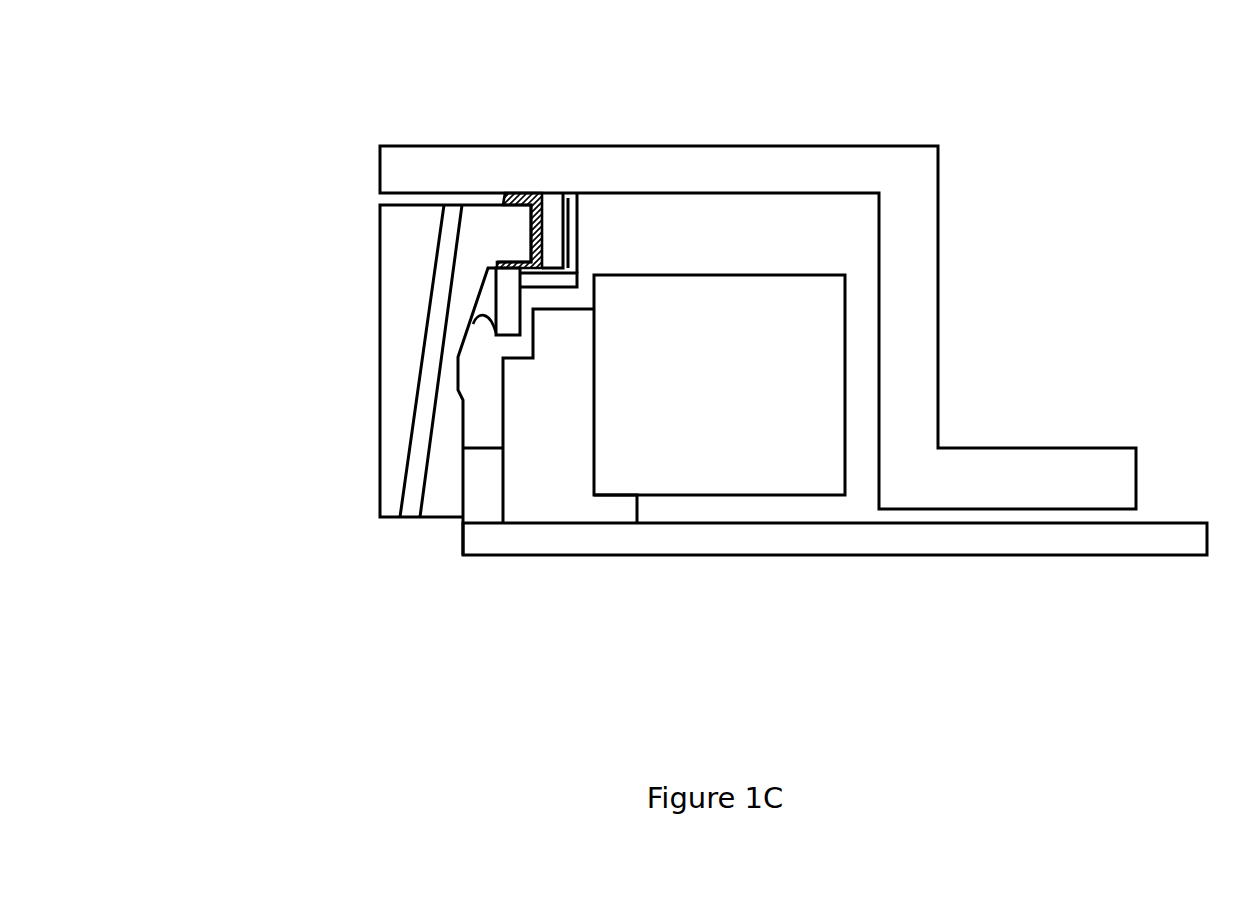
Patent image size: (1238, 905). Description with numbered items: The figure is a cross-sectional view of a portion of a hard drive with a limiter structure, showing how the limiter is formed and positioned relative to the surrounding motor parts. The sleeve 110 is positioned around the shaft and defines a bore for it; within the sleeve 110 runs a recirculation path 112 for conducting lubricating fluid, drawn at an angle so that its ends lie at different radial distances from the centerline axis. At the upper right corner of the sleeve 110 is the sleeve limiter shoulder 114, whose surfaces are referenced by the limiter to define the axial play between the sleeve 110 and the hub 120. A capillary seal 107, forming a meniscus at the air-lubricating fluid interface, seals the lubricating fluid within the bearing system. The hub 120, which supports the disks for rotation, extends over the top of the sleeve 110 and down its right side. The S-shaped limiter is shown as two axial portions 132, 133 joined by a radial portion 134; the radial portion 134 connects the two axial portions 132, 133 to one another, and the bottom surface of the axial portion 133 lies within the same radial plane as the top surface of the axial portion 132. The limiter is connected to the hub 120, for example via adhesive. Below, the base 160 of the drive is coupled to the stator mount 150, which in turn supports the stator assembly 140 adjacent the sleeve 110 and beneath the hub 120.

The capillary seal 107 is at (482, 320).
The sleeve 110 is at (388, 428).
The recirculation path 112 is at (415, 497).
The sleeve limiter shoulder 114 is at (468, 250).
The hub 120 is at (925, 262).
The axial portion 132 is at (505, 295).
The axial portion 133 is at (575, 216).
The radial portion 134 is at (547, 281).
The stator assembly 140 is at (719, 385).
The stator mount 150 is at (550, 416).
The base 160 is at (958, 530).